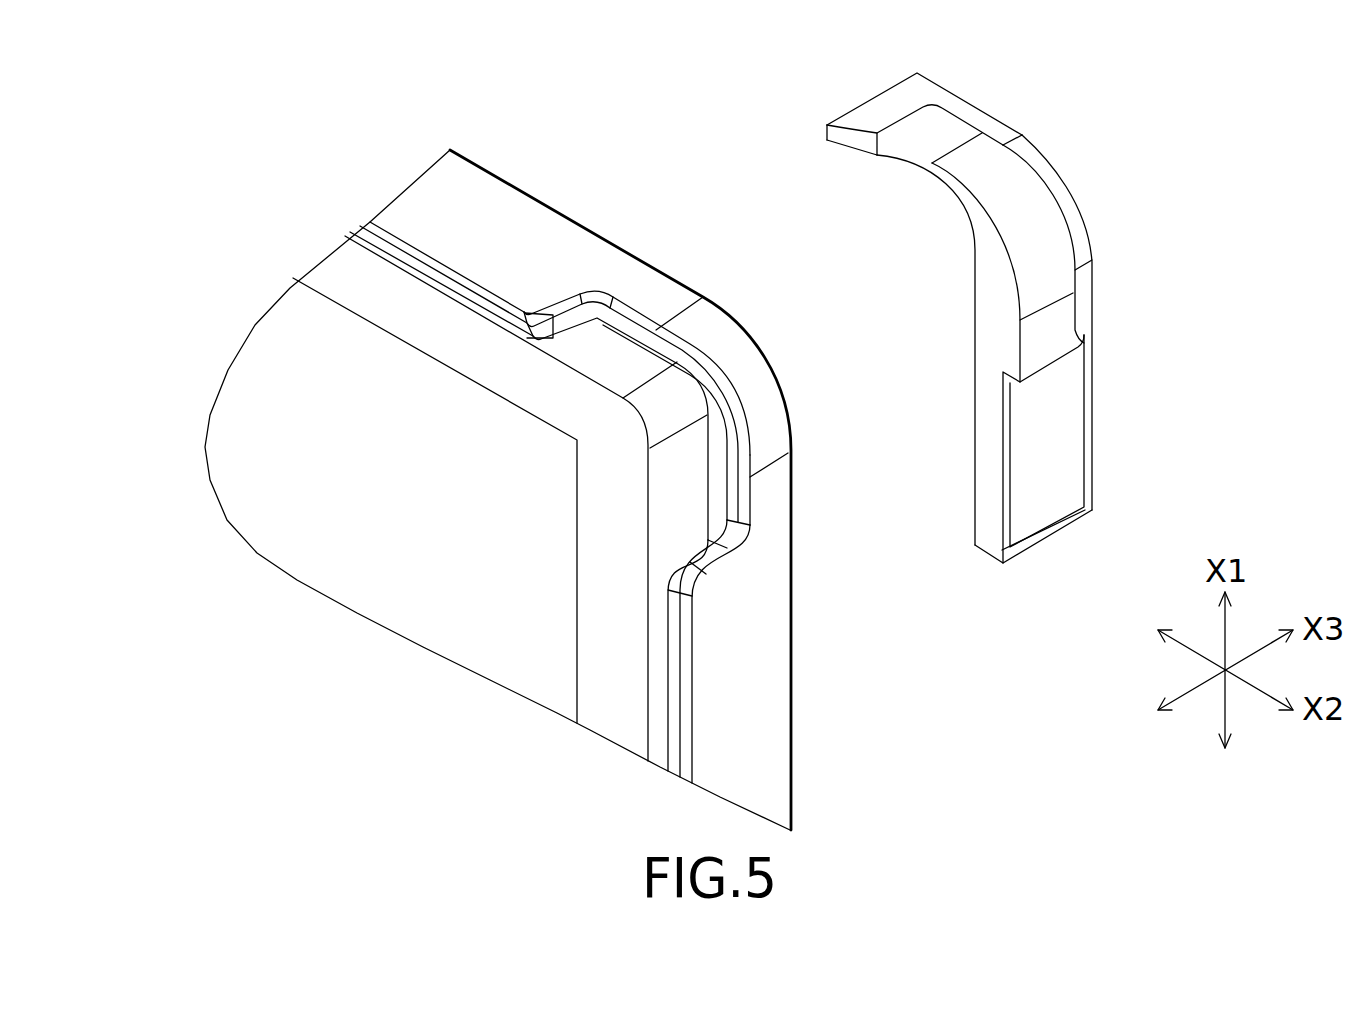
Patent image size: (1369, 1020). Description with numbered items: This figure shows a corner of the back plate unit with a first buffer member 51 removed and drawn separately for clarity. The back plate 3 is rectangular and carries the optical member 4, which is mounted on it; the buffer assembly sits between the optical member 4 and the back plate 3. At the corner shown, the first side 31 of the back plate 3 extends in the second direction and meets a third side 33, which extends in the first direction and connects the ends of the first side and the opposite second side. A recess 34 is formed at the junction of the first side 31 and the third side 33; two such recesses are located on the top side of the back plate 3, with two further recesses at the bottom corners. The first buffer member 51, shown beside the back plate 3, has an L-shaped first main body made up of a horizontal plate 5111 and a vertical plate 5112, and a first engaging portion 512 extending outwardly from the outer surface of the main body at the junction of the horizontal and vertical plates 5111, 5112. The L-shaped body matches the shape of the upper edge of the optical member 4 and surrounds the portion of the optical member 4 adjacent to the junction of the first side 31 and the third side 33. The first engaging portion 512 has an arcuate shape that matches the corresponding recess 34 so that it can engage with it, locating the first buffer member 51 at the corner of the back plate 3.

The back plate 3 is at (793, 645).
The first side 31 is at (438, 208).
The third side 33 is at (752, 677).
The recess 34 is at (637, 330).
The optical member 4 is at (297, 477).
The first buffer member 51 is at (1002, 307).
The horizontal plate 5111 is at (893, 103).
The vertical plate 5112 is at (1092, 433).
The first engaging portion 512 is at (1005, 187).